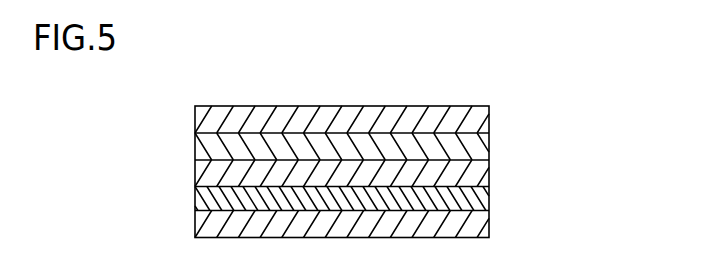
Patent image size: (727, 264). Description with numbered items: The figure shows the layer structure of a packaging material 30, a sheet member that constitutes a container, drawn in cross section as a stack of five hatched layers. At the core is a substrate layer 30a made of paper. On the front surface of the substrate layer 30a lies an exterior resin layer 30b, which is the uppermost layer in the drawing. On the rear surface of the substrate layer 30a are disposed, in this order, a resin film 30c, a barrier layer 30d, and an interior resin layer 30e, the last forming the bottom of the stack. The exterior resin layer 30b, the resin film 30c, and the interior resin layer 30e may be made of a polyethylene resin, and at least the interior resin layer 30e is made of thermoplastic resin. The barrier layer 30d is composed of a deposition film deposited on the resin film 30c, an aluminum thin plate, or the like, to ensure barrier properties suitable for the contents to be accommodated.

The packaging material 30 is at (354, 94).
The substrate layer 30a is at (485, 144).
The exterior resin layer 30b is at (485, 122).
The resin film 30c is at (485, 171).
The barrier layer 30d is at (485, 198).
The interior resin layer 30e is at (485, 224).